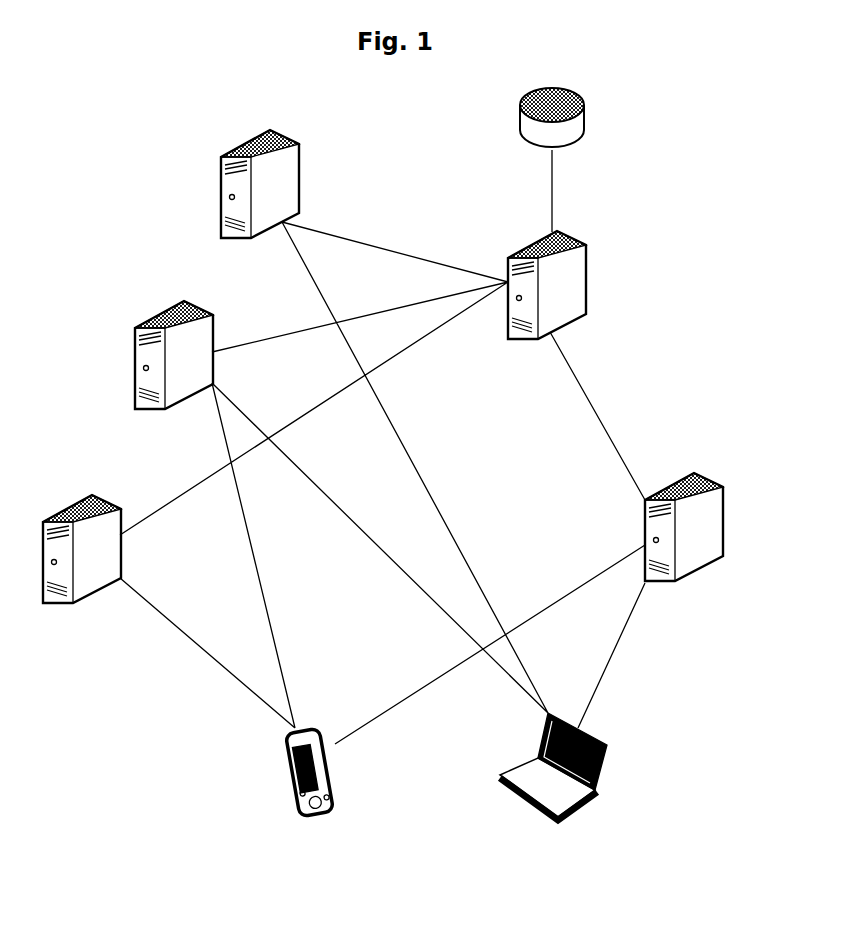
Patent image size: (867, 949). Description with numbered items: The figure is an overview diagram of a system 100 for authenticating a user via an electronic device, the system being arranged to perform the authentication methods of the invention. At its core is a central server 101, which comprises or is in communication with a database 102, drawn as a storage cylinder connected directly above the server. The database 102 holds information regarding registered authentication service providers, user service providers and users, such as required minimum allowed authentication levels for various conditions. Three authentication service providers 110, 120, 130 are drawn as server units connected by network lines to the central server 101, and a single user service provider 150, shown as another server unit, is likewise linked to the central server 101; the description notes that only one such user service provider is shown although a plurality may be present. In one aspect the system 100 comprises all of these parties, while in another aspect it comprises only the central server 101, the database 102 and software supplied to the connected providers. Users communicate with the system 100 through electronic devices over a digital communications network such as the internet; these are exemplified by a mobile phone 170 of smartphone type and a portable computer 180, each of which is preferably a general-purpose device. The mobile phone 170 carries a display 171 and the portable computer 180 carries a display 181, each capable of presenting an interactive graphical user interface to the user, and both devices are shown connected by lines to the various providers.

The system 100 is at (638, 282).
The central server 101 is at (547, 285).
The database 102 is at (552, 117).
The authentication service provider 110 is at (82, 549).
The authentication service provider 120 is at (174, 355).
The authentication service provider 130 is at (260, 184).
The user service provider 150 is at (684, 527).
The mobile phone 170 is at (264, 793).
The display 171 is at (296, 765).
The portable computer 180 is at (578, 799).
The display 181 is at (607, 765).